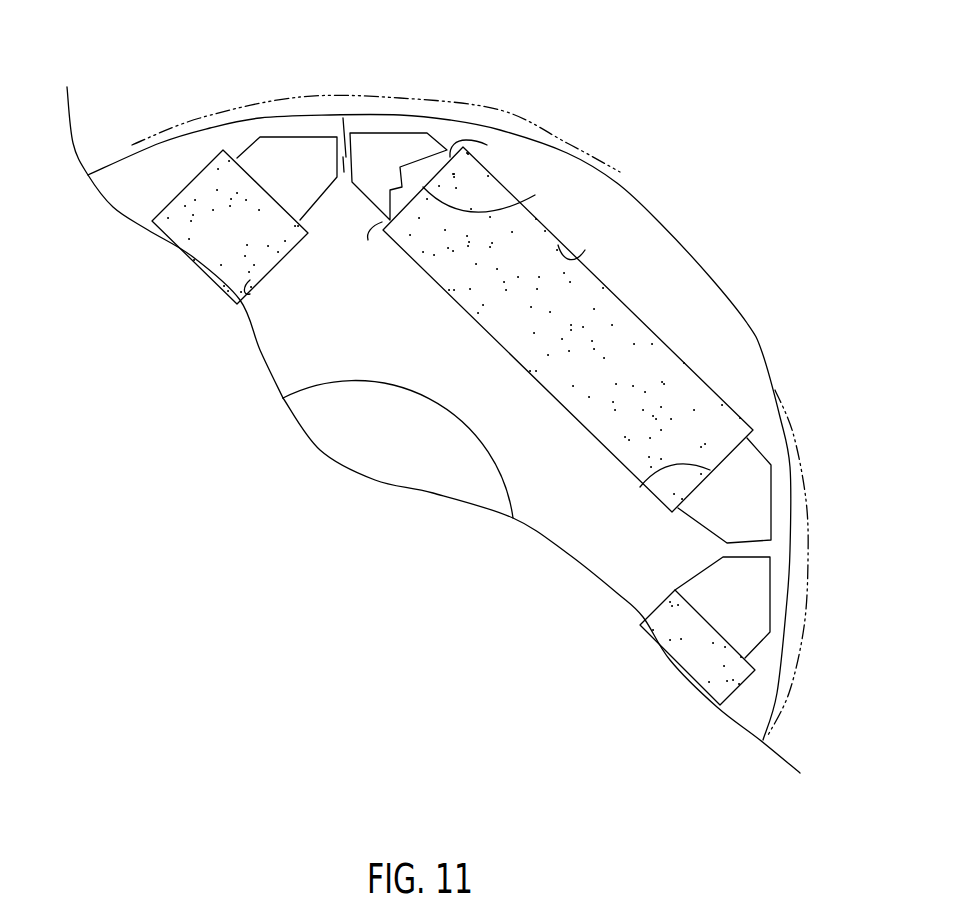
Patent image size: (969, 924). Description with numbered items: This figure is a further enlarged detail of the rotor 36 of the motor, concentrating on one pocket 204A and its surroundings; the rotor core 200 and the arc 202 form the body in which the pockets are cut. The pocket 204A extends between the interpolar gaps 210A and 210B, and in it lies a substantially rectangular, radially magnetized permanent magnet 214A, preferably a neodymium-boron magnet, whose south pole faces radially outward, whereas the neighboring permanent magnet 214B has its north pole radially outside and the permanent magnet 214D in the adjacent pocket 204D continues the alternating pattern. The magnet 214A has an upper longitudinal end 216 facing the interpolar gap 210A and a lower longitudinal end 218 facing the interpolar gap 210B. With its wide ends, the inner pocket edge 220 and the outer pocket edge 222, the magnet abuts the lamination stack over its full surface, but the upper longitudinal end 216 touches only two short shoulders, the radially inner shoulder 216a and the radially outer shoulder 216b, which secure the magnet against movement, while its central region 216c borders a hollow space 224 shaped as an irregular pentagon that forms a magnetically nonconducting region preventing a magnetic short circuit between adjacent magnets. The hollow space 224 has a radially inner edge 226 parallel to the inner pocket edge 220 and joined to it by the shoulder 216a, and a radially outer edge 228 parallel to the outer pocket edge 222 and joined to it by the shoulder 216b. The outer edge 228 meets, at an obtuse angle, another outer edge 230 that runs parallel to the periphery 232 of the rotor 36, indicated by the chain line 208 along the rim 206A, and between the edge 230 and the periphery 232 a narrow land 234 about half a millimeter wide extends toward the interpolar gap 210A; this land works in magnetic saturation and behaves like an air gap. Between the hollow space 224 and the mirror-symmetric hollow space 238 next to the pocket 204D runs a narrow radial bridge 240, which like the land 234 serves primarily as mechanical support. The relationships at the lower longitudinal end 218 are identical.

The rotor 36 is at (740, 112).
The rotor core 200 is at (403, 337).
The inner arc / hub surface 202 is at (430, 403).
The pocket 204A is at (585, 250).
The pocket 204D is at (250, 294).
The outer rim segment 206A is at (607, 173).
The outer circle reference line 208 is at (250, 105).
The interpolar gap 210A is at (343, 118).
The interpolar gap 210B is at (787, 547).
The permanent magnet 214A is at (621, 371).
The permanent magnet 214B is at (683, 660).
The permanent magnet 214D is at (287, 243).
The upper longitudinal end 216 is at (522, 203).
The shoulder 216a is at (368, 240).
The shoulder 216b is at (491, 156).
The central region 216c is at (398, 176).
The lower longitudinal end 218 is at (643, 483).
The inner pocket edge 220 is at (530, 373).
The outer pocket edge 222 is at (607, 288).
The hollow space 224 is at (368, 180).
The radially inner edge 226 is at (372, 210).
The radially outer edge 228 is at (447, 148).
The outer edge 230 is at (388, 132).
The periphery 232 is at (378, 120).
The narrow land 234 is at (407, 127).
The hollow space 238 is at (310, 177).
The radial bridge 240 is at (333, 130).